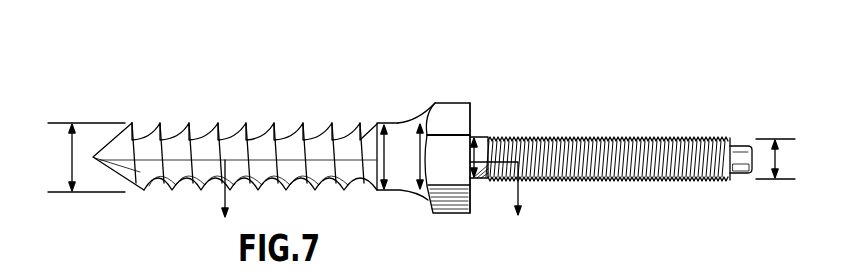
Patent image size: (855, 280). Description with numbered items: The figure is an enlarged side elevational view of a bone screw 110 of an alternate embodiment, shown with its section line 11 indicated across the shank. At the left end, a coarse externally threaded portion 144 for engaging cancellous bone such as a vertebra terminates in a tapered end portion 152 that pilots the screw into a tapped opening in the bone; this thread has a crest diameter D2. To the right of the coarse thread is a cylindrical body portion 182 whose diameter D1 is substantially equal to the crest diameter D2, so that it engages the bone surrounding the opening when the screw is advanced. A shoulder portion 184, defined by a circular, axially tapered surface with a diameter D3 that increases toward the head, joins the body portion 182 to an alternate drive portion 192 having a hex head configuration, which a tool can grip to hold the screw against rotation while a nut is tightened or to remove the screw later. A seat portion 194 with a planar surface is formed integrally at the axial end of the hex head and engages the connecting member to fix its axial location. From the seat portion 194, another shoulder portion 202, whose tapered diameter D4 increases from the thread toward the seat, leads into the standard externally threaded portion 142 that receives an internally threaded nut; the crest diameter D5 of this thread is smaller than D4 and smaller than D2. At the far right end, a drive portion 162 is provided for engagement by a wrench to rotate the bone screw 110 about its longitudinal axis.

The bone screw 110 is at (558, 93).
The threaded portion 144 is at (252, 122).
The tapered end portion 152 is at (103, 165).
The cylindrical body portion 182 is at (393, 119).
The shoulder portion 184 is at (423, 104).
The alternate drive portion 192 is at (461, 99).
The seat portion 194 is at (474, 112).
The shoulder portion 202 is at (486, 134).
The threaded portion 142 is at (643, 138).
The drive portion 162 is at (736, 173).
The section line 11- 11 is at (372, 189).
The diameter of body portion D1 is at (390, 168).
The crest diameter of threaded portion D2 is at (72, 148).
The diameter of shoulder portion tapered surface D3 is at (409, 168).
The diameter of shoulder portion tapered surface D4 is at (472, 184).
The crest diameter of threaded portion D5 is at (777, 160).